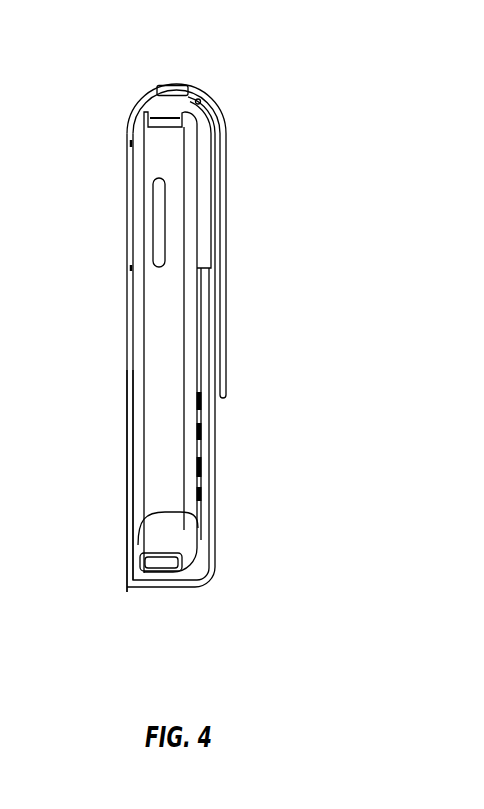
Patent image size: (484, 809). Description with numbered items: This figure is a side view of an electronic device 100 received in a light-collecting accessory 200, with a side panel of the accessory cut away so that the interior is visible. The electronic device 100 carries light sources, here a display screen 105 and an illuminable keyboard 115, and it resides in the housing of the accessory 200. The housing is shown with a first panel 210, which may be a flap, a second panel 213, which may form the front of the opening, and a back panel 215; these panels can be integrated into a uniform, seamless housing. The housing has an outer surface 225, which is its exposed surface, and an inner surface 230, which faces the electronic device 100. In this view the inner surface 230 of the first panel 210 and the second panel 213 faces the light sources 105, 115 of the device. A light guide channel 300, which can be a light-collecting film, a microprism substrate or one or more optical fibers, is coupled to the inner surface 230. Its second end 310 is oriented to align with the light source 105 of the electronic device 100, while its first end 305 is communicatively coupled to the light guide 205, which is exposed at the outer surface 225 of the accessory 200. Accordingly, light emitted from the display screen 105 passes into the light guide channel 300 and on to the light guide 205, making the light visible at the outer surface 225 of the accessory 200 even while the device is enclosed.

The electronic device 100 is at (155, 442).
The display screen 105 is at (197, 225).
The keyboard 115 is at (200, 480).
The light-collecting accessory 200 is at (128, 203).
The light guide 205 is at (168, 84).
The first panel 210 is at (225, 193).
The second panel 213 is at (216, 548).
The back panel 215 is at (128, 370).
The outer surface 225 is at (128, 142).
The inner surface 230 is at (209, 423).
The light guide channel 300 is at (216, 101).
The first end of the light guide channel 305 is at (201, 98).
The second end of the light guide channel 310 is at (224, 347).